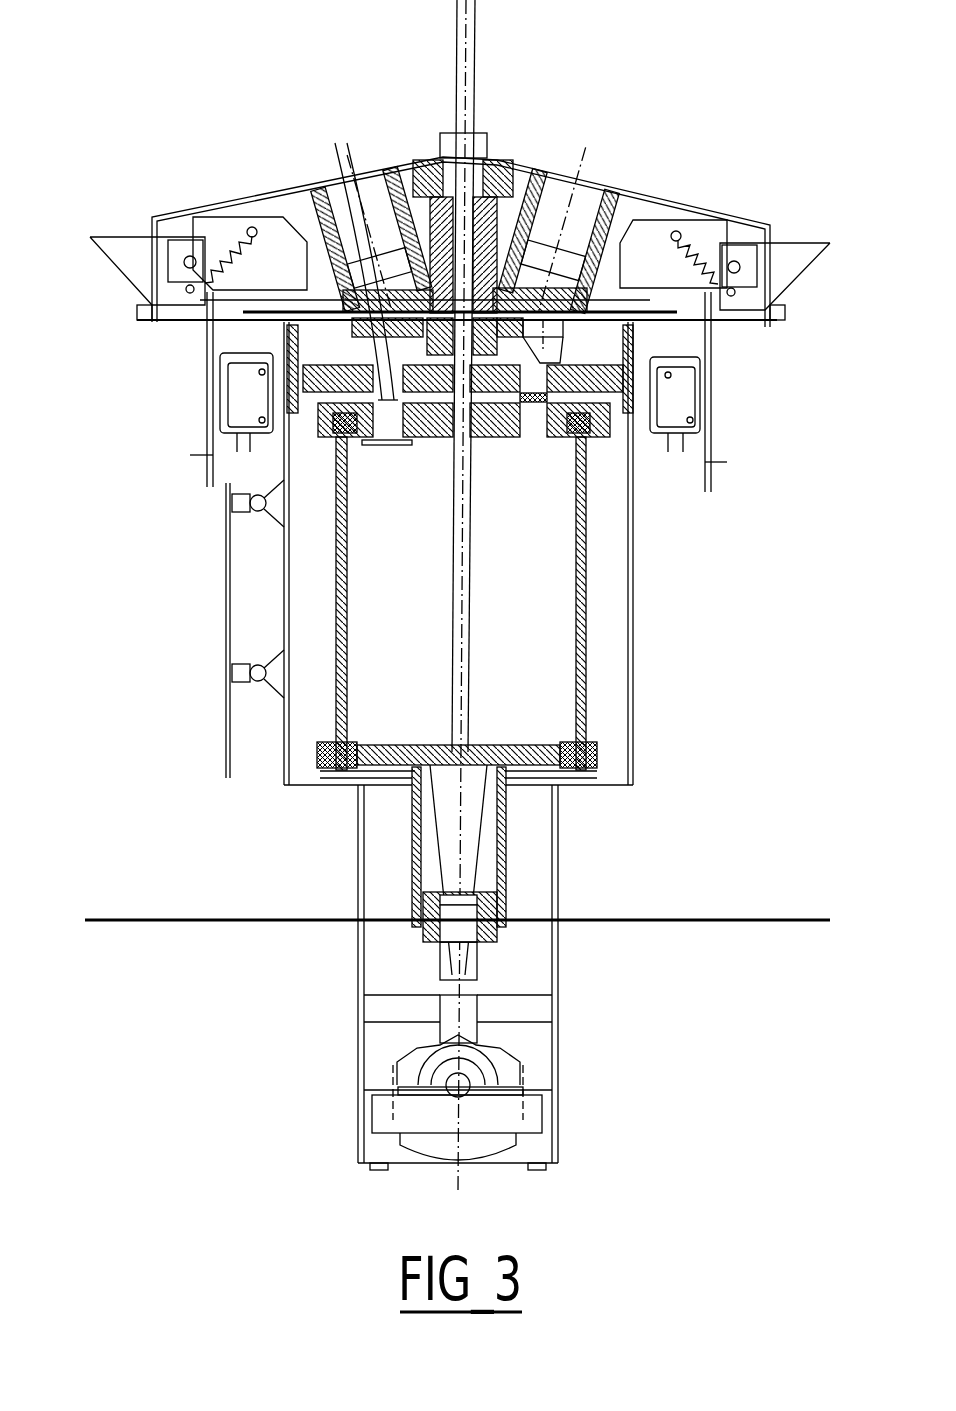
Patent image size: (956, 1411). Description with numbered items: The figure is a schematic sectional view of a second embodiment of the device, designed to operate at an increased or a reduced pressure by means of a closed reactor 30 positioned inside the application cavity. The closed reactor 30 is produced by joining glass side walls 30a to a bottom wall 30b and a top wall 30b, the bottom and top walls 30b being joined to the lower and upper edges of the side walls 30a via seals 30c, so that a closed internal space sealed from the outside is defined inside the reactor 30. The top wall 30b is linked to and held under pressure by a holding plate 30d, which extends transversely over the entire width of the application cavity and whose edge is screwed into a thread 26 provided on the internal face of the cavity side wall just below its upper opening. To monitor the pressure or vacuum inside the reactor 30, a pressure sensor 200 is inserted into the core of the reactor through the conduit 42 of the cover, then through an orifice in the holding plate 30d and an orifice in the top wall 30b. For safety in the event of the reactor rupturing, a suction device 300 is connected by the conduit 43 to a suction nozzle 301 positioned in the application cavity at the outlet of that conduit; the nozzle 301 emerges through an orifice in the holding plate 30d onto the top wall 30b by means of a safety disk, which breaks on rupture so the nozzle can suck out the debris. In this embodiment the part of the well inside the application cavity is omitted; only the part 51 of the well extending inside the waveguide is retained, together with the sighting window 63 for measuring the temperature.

The thread 26 is at (288, 335).
The closed reactor 30 is at (585, 658).
The glass side walls 30a is at (335, 593).
The top wall and bottom wall 30b is at (500, 437).
The seals 30c is at (593, 440).
The holding plate 30d is at (318, 405).
The conduit 42 is at (322, 182).
The conduit 43 is at (580, 233).
The part of the well 51 is at (503, 850).
The sighting window 63 is at (475, 890).
The pressure sensor 200 is at (345, 157).
The suction device 300 is at (620, 213).
The suction nozzle 301 is at (560, 363).